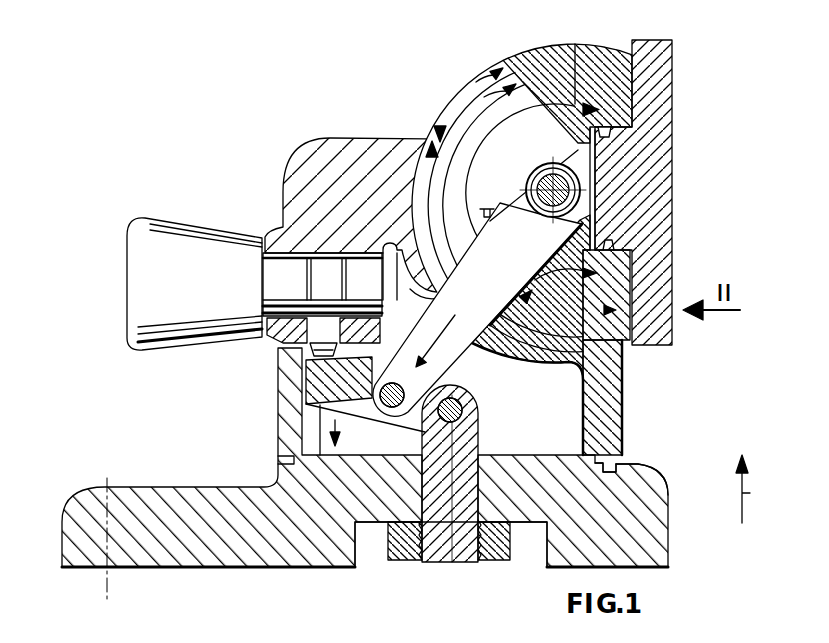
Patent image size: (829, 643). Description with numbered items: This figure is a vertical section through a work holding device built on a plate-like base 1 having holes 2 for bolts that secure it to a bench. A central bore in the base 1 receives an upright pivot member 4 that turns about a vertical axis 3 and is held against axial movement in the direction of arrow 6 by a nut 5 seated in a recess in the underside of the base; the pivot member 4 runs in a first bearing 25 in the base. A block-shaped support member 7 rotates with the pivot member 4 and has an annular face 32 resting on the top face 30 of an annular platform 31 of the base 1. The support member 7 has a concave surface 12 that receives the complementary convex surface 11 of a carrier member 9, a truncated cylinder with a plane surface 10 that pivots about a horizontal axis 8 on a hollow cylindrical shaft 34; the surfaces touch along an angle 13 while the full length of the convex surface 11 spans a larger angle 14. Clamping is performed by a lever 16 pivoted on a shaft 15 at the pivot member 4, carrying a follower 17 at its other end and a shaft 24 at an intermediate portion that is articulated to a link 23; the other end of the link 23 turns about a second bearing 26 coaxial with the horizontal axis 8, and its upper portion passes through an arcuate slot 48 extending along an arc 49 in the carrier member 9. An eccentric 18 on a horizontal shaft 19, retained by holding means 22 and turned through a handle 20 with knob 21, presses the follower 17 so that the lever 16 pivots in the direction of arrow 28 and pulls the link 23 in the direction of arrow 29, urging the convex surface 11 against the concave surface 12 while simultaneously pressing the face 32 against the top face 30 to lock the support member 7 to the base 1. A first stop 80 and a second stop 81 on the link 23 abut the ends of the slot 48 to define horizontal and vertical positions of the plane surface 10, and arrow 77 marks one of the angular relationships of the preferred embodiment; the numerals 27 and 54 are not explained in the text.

The base 1 is at (80, 532).
The holes 2 is at (105, 567).
The vertical axis 3 is at (450, 452).
The pivot member 4 is at (456, 567).
The nut 5 is at (400, 546).
The arrow 6 is at (749, 489).
The support member 7 is at (308, 200).
The horizontal axis 8 is at (581, 192).
The carrier member 9 is at (599, 80).
The plane surface 10 is at (632, 77).
The convex surface 11 is at (446, 106).
The concave surface 12 is at (412, 165).
The angle 13 is at (612, 300).
The angle 14 is at (563, 98).
The shaft 15 is at (464, 408).
The lever 16 is at (310, 381).
The follower 17 is at (308, 329).
The eccentric 18 is at (318, 266).
The shaft 19 is at (276, 262).
The handle 20 is at (228, 239).
The knob 21 is at (142, 257).
The holding means 22 is at (368, 298).
The link 23 is at (436, 296).
The shaft 24 is at (394, 409).
The first bearing 25 is at (437, 485).
The second bearing 26 is at (598, 202).
The step 27 is at (284, 463).
The arrow 28 is at (337, 418).
The arrow 29 is at (446, 346).
The top face 30 is at (566, 452).
The annular platform 31 is at (642, 477).
The annular face 32 is at (614, 468).
The hollow cylindrical shaft 34 is at (608, 163).
The arcuate slot 48 is at (470, 102).
The arc 49 is at (474, 100).
The eccentric 54 is at (590, 195).
The arrow 77 is at (447, 123).
The first stop 80 is at (487, 206).
The second stop 81 is at (542, 268).